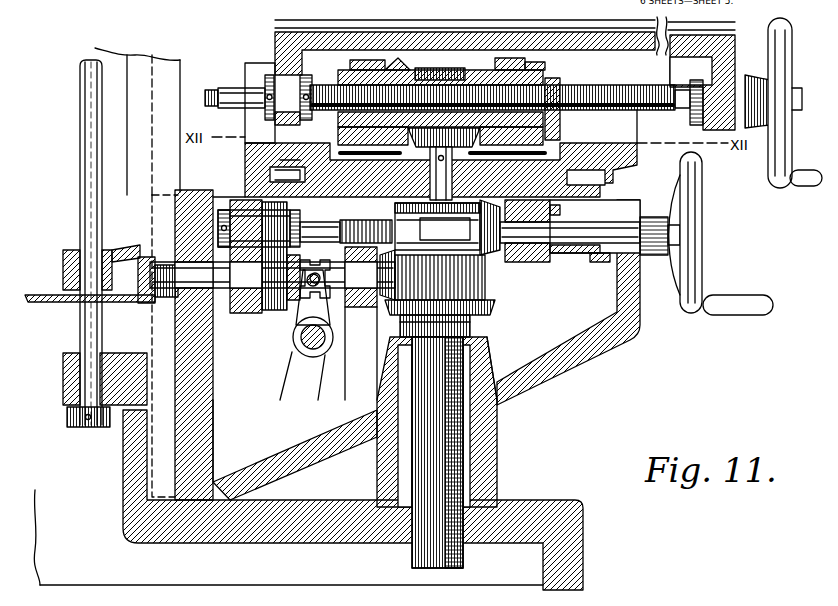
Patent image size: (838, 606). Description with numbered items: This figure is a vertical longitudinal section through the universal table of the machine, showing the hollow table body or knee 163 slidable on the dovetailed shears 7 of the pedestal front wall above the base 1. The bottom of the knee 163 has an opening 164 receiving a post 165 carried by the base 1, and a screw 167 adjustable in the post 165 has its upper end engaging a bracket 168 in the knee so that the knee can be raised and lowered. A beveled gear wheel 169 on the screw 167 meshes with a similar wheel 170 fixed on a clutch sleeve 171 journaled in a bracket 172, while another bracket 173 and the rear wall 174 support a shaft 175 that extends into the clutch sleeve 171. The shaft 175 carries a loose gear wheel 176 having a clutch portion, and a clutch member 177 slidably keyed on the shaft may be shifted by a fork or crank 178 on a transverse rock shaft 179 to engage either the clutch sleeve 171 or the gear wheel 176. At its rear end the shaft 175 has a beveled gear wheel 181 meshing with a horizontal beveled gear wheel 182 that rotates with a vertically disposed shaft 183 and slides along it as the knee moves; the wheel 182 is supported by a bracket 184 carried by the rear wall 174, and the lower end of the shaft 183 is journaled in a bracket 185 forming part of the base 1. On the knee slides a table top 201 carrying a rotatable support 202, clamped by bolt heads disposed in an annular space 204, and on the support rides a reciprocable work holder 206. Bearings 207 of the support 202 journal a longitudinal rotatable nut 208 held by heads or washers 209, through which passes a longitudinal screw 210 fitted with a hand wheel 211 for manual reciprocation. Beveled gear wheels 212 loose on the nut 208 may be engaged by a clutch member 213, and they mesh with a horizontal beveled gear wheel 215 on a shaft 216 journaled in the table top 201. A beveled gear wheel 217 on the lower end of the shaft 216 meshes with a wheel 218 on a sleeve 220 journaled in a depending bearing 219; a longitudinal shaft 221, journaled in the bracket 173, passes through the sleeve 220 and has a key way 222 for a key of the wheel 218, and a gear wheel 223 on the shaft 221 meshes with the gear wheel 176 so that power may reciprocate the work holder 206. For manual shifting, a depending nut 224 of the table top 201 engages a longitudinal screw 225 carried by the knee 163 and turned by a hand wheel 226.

The base 1 is at (583, 527).
The shears 7 is at (170, 90).
The hollow table body or knee 163 is at (583, 338).
The opening 164 is at (371, 437).
The post 165 is at (497, 460).
The screw 167 is at (465, 562).
The bracket 168 is at (480, 290).
The beveled gear wheel 169 is at (472, 322).
The beveled gear wheel 170 is at (500, 368).
The clutch sleeve 171 is at (425, 373).
The bracket 172 is at (455, 372).
The bracket 173 is at (245, 250).
The rear wall 174 is at (213, 427).
The shaft 175 is at (240, 318).
The loose gear wheel 176 is at (276, 315).
The clutch member 177 is at (298, 305).
The fork or crank 178 is at (312, 352).
The transverse rock shaft 179 is at (328, 355).
The beveled gear wheel 181 is at (148, 258).
The horizontal beveled gear wheel 182 is at (38, 295).
The vertically disposed shaft 183 is at (90, 148).
The bracket 184 is at (90, 250).
The bracket 185 is at (75, 390).
The table top 201 is at (632, 188).
The rotatable support 202 is at (634, 147).
The annular space 204 is at (275, 178).
The reciprocable work holder 206 is at (425, 35).
The bearings 207 is at (370, 60).
The longitudinal rotatable nut 208 is at (545, 90).
The heads or washers 209 is at (540, 78).
The longitudinal screw 210 is at (695, 101).
The hand wheel 211 is at (792, 165).
The beveled gear wheels 212 is at (515, 58).
The clutch member 213 is at (460, 68).
The horizontal beveled gear wheel 215 is at (505, 130).
The shaft 216 is at (453, 182).
The beveled gear wheel 217 is at (390, 197).
The beveled gear wheel 218 is at (480, 247).
The depending bearing 219 is at (563, 262).
The sleeve 220 is at (612, 240).
The longitudinal shaft 221 is at (623, 225).
The longitudinal key way 222 is at (598, 244).
The gear wheel 223 is at (292, 213).
The depending nut 224 is at (485, 262).
The longitudinal screw 225 is at (362, 217).
The hand wheel 226 is at (702, 227).